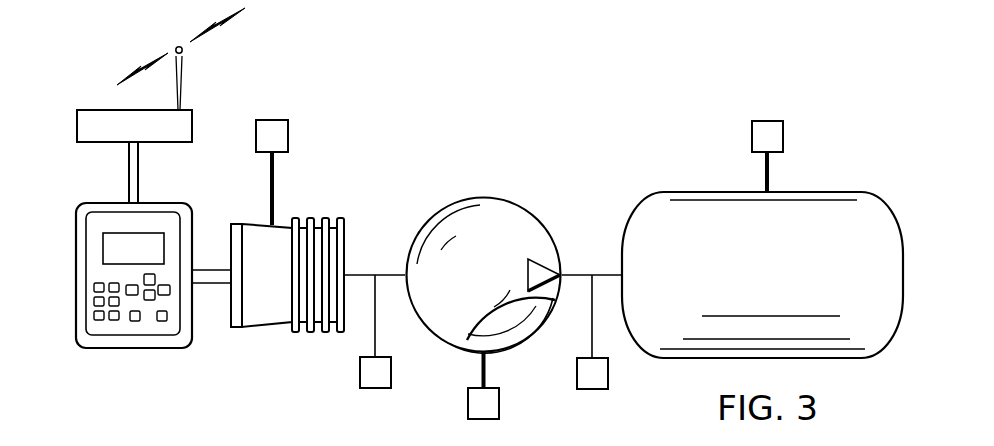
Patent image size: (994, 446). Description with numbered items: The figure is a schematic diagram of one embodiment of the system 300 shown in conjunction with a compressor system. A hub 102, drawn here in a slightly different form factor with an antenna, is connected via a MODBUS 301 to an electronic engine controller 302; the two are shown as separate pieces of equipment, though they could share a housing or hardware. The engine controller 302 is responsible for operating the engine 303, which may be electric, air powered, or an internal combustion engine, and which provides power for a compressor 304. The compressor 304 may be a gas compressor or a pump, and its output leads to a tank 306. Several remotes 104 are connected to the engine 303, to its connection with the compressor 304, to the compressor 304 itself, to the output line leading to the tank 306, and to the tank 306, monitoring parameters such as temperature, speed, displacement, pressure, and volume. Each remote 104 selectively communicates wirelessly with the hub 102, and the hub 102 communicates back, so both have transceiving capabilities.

The system 300 is at (664, 79).
The hub 102 is at (99, 108).
The remote 104 is at (265, 118).
The MODBUS 301 is at (127, 163).
The electronic engine controller 302 is at (106, 352).
The engine 303 is at (255, 328).
The compressor 304 is at (506, 198).
The tank 306 is at (840, 190).